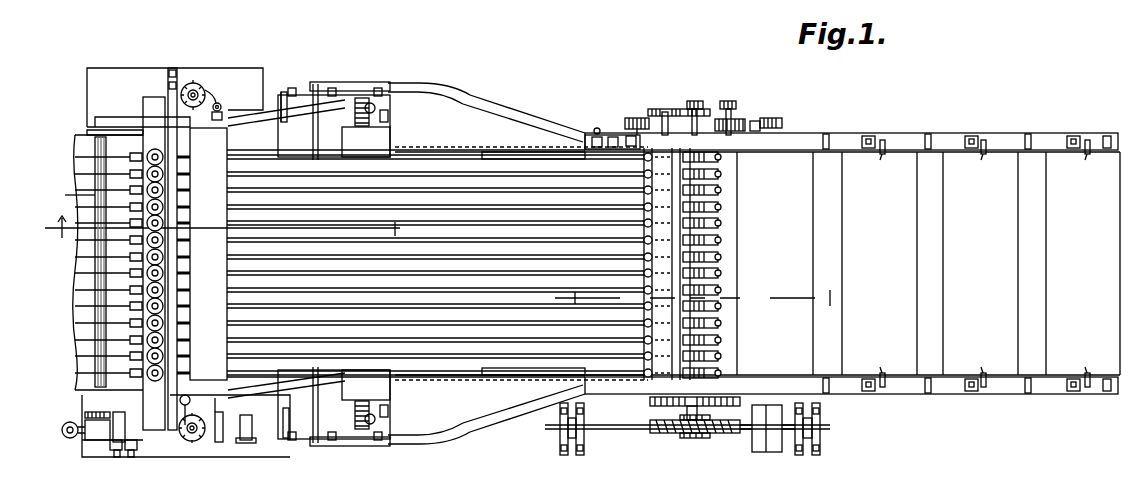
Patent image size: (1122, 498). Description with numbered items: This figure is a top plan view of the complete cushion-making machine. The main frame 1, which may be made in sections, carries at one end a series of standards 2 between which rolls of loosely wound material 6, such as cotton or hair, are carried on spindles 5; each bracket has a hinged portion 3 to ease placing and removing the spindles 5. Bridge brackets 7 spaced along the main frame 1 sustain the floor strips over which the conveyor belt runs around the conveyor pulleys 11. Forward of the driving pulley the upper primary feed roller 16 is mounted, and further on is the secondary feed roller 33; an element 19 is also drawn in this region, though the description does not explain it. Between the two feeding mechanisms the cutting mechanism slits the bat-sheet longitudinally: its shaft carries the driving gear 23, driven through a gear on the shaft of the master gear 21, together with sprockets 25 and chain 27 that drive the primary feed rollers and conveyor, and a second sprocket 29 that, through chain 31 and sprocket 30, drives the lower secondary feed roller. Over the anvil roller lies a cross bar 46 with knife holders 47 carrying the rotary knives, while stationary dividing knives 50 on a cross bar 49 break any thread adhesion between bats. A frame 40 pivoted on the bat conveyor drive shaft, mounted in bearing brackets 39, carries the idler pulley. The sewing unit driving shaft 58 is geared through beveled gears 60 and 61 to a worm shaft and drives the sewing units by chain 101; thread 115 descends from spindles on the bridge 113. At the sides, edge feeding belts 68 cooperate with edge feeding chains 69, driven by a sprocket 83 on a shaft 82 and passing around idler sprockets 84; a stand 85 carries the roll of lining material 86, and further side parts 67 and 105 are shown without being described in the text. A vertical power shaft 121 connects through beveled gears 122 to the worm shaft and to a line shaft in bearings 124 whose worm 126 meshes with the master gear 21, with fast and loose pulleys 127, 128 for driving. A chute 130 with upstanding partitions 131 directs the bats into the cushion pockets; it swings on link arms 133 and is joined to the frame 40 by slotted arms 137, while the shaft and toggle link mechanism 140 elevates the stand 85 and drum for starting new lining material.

The main frame 1 is at (950, 388).
The standards 2 is at (1072, 391).
The hinged portion 3 is at (1090, 392).
The spindles 5 is at (933, 264).
The material 6 is at (566, 244).
The bridge brackets 7 is at (1030, 393).
The conveyor pulleys 11 is at (710, 296).
The upper primary feed roller 16 is at (725, 222).
The gear 19 is at (745, 121).
The master gear 21 is at (660, 433).
The driving gear 23 is at (660, 404).
The sprockets 25 is at (770, 116).
The chain 27 is at (738, 92).
The second sprocket 29 is at (680, 98).
The sprocket 30 is at (660, 102).
The chain 31 is at (636, 116).
The feed roller 33 is at (648, 250).
The bearing brackets 39 is at (632, 140).
The frame 40 is at (478, 378).
The cross bar 46 is at (712, 305).
The knife holders 47 is at (722, 191).
The cross bar 49 is at (644, 206).
The stationary dividing knives 50 is at (646, 305).
The driving shaft of the sewing machine unit 58 is at (116, 458).
The beveled gear 60 is at (114, 450).
The beveled gear 61 is at (128, 412).
The plate 67 is at (66, 195).
The edge feeding belts 68 is at (95, 385).
The edge feeding chains 69 is at (286, 440).
The shaft 82 is at (205, 92).
The sprocket 83 is at (195, 418).
The idler sprockets 84 is at (375, 440).
The stand 85 is at (240, 385).
The roll of lining material 86 is at (202, 254).
The chain 101 is at (130, 452).
The roller 105 is at (142, 280).
The bridge 113 is at (130, 106).
The thread 115 is at (160, 304).
The vertical power shaft 121 is at (62, 432).
The beveled gears 122 is at (85, 416).
The bearings 124 is at (820, 428).
The worm 126 is at (698, 438).
The fast pulley 127 is at (762, 452).
The loose pulley 128 is at (790, 452).
The chute 130 is at (285, 398).
The longitudinal upstanding partitions 131 is at (311, 276).
The link arms 133 is at (340, 446).
The arms 137 is at (384, 378).
The shaft and toggle link mechanism 140 is at (250, 443).